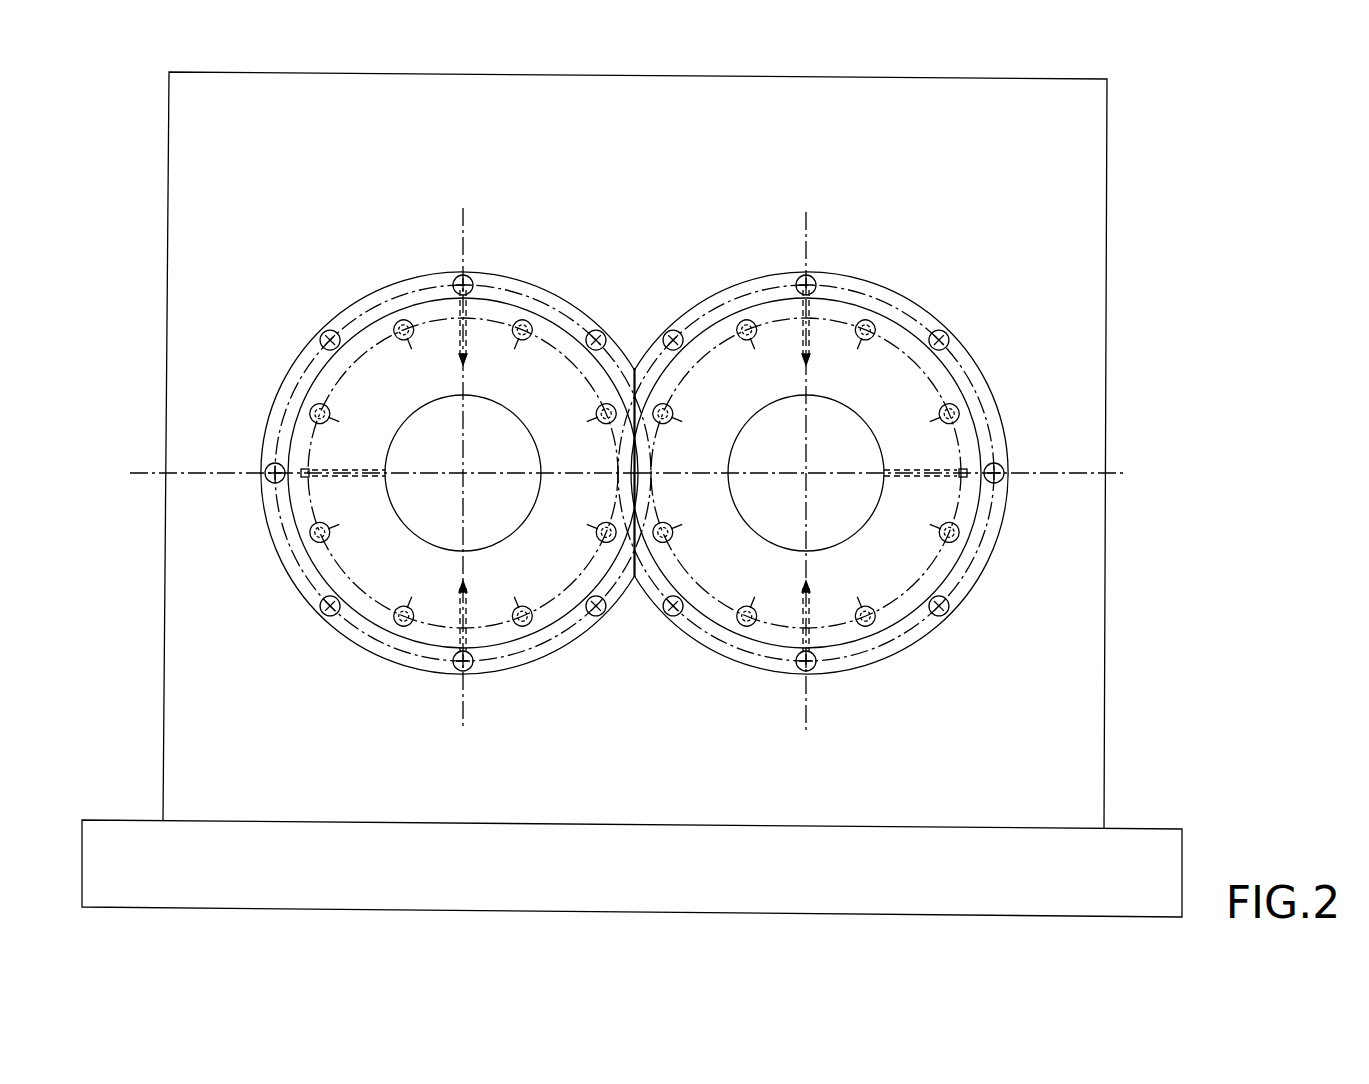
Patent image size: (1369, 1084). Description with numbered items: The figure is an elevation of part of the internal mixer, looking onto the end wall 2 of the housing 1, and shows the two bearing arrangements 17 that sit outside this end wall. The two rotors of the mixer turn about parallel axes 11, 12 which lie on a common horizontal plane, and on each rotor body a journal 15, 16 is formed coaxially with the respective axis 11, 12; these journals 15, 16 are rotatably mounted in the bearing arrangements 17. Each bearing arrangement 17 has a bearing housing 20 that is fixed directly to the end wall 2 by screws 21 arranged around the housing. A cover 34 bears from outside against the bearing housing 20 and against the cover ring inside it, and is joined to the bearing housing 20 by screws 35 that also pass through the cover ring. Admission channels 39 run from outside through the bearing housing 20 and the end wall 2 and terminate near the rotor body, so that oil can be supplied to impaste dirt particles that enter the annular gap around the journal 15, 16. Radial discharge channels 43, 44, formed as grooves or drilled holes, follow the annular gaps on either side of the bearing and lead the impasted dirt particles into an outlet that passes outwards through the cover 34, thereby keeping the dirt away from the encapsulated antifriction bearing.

The housing 1 is at (1113, 165).
The end wall 2 is at (1038, 142).
The axis 11 is at (465, 471).
The axis 12 is at (804, 471).
The journal 15 is at (433, 430).
The journal 16 is at (845, 437).
The bearing arrangement 17 is at (360, 295).
The bearing housing 20 is at (407, 640).
The screws 21 is at (457, 280).
The cover 34 is at (358, 542).
The screws 35 is at (393, 622).
The admission channels 39 is at (468, 314).
The radial discharge channel 43 is at (333, 471).
The radial discharge channel 44 is at (634, 473).